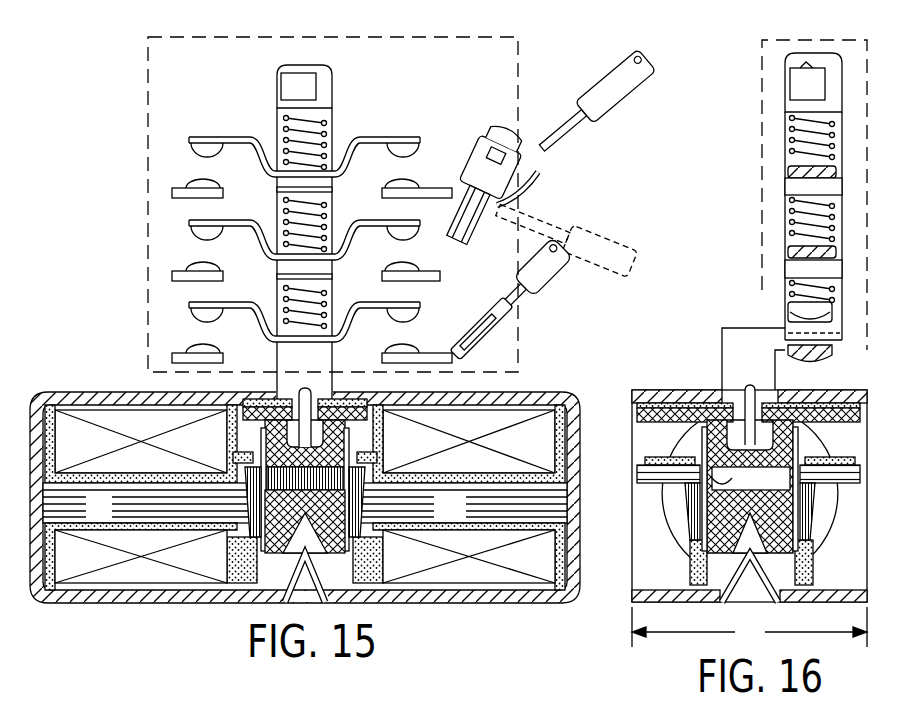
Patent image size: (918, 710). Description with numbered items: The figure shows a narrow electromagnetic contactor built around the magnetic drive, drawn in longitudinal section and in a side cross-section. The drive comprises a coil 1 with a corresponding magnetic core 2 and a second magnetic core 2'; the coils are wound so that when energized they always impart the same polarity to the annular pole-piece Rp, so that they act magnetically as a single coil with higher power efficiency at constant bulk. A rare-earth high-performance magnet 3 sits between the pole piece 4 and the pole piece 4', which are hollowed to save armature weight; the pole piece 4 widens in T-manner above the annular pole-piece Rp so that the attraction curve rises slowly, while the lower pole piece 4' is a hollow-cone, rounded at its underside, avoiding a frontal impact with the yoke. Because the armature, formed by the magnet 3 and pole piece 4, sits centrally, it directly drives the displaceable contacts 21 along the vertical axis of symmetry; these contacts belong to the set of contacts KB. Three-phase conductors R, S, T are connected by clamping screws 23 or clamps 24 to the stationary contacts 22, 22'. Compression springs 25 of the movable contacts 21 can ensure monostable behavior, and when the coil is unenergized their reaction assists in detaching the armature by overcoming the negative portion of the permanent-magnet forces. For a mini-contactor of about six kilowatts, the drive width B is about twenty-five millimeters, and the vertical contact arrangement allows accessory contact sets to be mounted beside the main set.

In FIG. 15, the coil 1 is at (114, 458).
In FIG. 15, the magnetic core 2 is at (147, 503).
In FIG. 15, the magnetic core 2' is at (463, 503).
In FIG. 15, the rare-earth high-performance magnet 3 is at (305, 479).
In FIG. 16, the rare-earth high-performance magnet 3 is at (776, 490).
In FIG. 15, the pole piece 4 is at (305, 427).
In FIG. 15, the pole piece 4' is at (305, 521).
In FIG. 16, the pole piece 4' is at (743, 527).
In FIG. 15, the displaceable contacts 21 is at (397, 148).
In FIG. 15, the stationary contact 22 is at (218, 199).
In FIG. 15, the stationary contact 22' is at (420, 171).
In FIG. 15, the clamping screw 23 is at (484, 140).
In FIG. 15, the clamp 24 is at (500, 332).
In FIG. 15, the compression spring 25 is at (295, 127).
In FIG. 16, the compression spring 25 is at (842, 210).
In FIG. 15, the annular pole-piece Rp is at (319, 502).
In FIG. 16, the annular pole-piece Rp is at (810, 503).
In FIG. 15, the set of contacts KB is at (462, 37).
In FIG. 16, the set of contacts KB is at (805, 38).
In FIG. 15, the three-phase conductor R is at (168, 170).
In FIG. 16, the three-phase conductor R is at (772, 161).
In FIG. 15, the three-phase conductor S is at (300, 250).
In FIG. 16, the three-phase conductor S is at (773, 248).
In FIG. 15, the three-phase conductor T is at (306, 332).
In FIG. 16, the three-phase conductor T is at (853, 343).
In FIG. 16, the drive width B is at (749, 627).